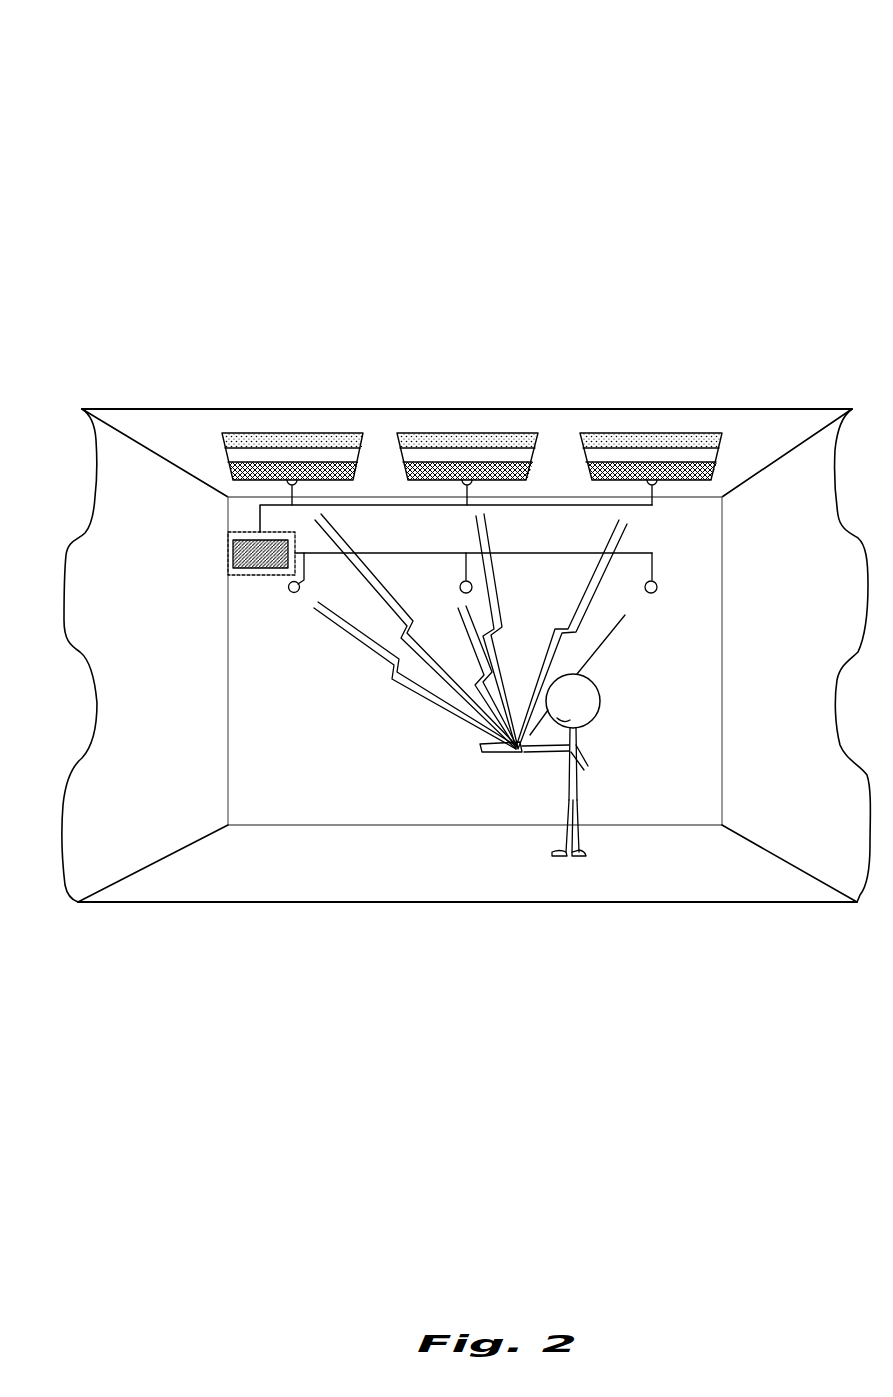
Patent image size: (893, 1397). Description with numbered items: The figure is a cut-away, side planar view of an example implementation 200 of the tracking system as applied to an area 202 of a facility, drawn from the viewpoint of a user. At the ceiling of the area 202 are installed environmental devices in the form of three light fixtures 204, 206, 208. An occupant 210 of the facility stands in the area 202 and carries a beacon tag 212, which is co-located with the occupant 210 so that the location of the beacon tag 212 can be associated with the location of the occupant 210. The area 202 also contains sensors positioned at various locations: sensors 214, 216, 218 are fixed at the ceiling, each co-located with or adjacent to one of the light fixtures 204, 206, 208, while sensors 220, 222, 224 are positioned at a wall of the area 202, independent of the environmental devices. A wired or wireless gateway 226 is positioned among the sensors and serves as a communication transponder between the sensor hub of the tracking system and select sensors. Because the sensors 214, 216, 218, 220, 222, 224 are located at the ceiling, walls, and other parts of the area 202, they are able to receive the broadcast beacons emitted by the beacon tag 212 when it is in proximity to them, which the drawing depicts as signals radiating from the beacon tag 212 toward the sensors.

The example implementation 200 is at (160, 58).
The area 202 is at (320, 750).
The light fixture 204 is at (298, 432).
The light fixture 206 is at (474, 432).
The light fixture 208 is at (658, 432).
The occupant 210 is at (584, 768).
The beacon tag 212 is at (497, 752).
The sensor 214 is at (290, 479).
The sensor 216 is at (465, 479).
The sensor 218 is at (650, 479).
The sensor 220 is at (289, 591).
The sensor 222 is at (464, 578).
The sensor 224 is at (656, 580).
The wired or wireless gateway 226 is at (228, 553).